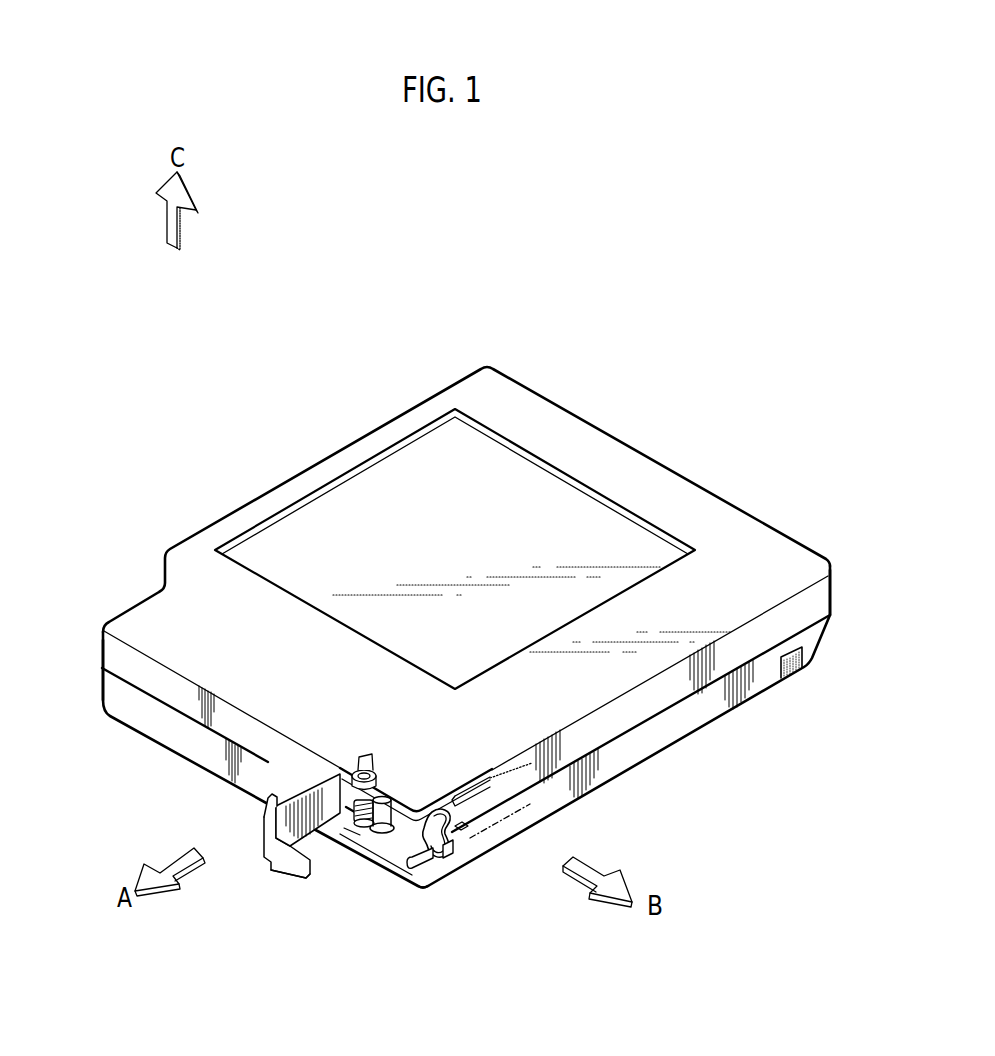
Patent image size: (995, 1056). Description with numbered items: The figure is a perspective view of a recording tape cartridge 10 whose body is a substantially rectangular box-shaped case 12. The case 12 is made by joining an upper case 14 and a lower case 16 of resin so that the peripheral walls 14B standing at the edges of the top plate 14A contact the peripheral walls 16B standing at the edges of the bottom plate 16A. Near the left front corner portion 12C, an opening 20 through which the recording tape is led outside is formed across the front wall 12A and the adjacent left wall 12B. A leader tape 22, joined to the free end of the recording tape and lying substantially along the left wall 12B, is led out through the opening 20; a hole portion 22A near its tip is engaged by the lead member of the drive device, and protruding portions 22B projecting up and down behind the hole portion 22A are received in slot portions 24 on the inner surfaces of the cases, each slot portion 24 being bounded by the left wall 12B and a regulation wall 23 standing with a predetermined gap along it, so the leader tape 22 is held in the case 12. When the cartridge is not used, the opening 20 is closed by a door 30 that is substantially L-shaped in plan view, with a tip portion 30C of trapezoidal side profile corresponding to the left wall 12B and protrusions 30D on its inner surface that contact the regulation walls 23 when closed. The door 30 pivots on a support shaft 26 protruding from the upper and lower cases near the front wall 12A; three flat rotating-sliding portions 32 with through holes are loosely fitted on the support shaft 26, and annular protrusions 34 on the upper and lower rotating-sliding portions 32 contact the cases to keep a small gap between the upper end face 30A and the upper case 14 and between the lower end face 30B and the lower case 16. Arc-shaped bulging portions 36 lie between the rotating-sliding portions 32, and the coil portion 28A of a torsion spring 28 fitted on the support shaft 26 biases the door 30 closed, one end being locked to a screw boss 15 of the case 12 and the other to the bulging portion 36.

The recording tape cartridge 10 is at (638, 357).
The case 12 is at (847, 463).
The upper case 14 is at (761, 512).
The lower case 16 is at (834, 631).
The top plate 14A is at (372, 492).
The peripheral walls 14B is at (178, 692).
The bottom plate 16A is at (720, 720).
The peripheral walls 16B is at (205, 755).
The front wall 12A is at (130, 760).
The left wall 12B is at (740, 765).
The left front corner portion 12C is at (430, 900).
The screw boss 15 is at (410, 805).
The opening 20 is at (387, 852).
The leader tape 22 is at (446, 828).
The hole portion 22A is at (469, 836).
The protruding portions 22B is at (450, 790).
The regulation wall 23 is at (390, 870).
The slot portion 24 is at (417, 892).
The support shaft 26 is at (383, 797).
The coil portion 28A is at (352, 795).
The torsion spring 28 is at (365, 762).
The door 30 is at (259, 870).
The upper end face 30A is at (288, 800).
The lower end face 30B is at (327, 845).
The tip portion 30C is at (275, 880).
The protrusions 30D is at (271, 801).
The rotating-sliding portions 32 is at (342, 837).
The annular protrusion 34 is at (358, 762).
The bulging portions 36 is at (337, 773).